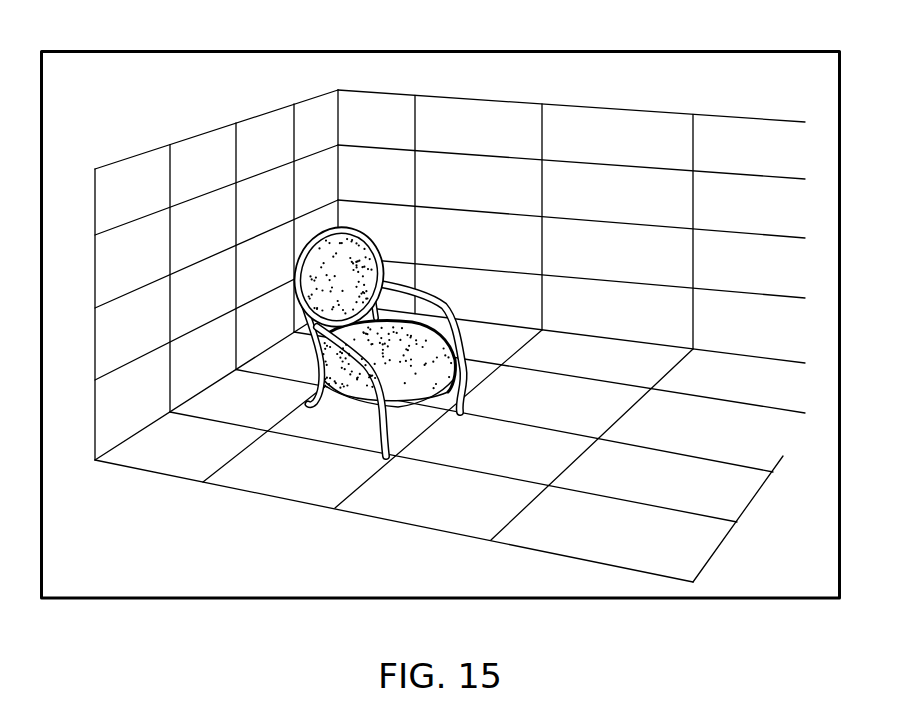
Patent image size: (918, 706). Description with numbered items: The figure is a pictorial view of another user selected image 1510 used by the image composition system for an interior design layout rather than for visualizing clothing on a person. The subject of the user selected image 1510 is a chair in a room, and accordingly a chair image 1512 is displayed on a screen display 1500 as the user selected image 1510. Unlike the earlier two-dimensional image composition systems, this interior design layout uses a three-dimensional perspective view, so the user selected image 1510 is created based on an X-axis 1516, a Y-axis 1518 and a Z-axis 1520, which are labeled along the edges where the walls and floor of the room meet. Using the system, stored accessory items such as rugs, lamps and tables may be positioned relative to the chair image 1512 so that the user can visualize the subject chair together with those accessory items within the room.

The screen display 1500 is at (195, 77).
The user selected image 1510 is at (606, 93).
The chair image 1512 is at (370, 400).
The X-axis 1516 is at (735, 357).
The Y-axis 1518 is at (339, 126).
The Z-axis 1520 is at (133, 437).